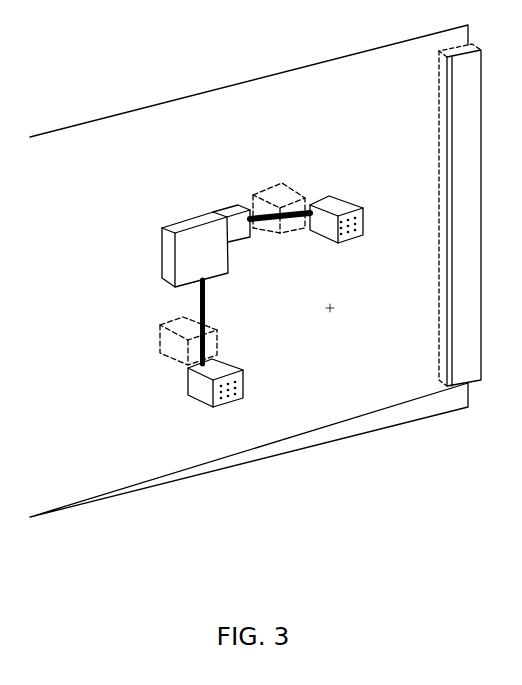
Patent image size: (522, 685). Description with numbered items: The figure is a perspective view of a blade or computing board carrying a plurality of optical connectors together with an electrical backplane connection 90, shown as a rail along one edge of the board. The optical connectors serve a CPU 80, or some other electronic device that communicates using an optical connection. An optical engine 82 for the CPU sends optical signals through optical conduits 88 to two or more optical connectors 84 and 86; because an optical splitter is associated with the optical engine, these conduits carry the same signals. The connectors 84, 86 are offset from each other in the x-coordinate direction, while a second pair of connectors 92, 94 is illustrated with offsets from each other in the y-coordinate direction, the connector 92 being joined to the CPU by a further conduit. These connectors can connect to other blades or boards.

The CPU 80 is at (170, 226).
The optical engine 82 is at (222, 211).
The optical connector 84 is at (262, 194).
The optical connector 86 is at (344, 204).
The optical conduits 88 is at (255, 228).
The electrical backplane connection 90 is at (476, 54).
The optical connector 92 is at (188, 389).
The optical connector 94 is at (160, 340).